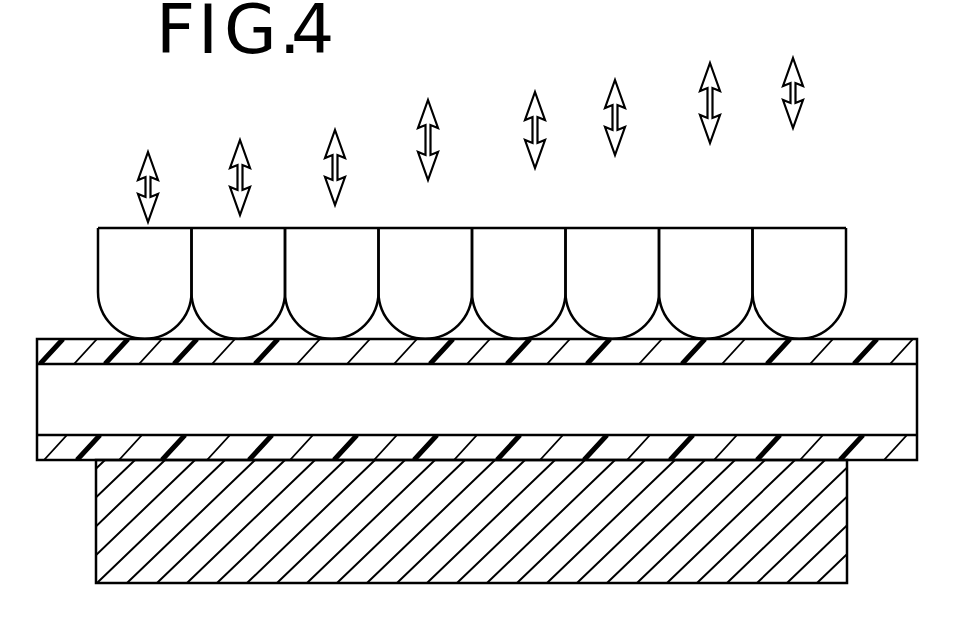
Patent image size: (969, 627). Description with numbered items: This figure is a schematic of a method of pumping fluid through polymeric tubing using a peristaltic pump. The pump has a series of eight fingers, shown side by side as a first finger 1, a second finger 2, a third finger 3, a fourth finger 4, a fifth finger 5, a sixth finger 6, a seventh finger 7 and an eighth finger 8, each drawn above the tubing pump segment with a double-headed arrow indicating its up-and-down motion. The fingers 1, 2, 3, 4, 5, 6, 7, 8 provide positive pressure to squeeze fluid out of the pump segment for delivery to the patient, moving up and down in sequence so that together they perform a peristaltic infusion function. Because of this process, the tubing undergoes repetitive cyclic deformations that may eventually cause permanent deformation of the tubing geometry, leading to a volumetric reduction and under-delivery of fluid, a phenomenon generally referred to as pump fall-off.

The finger 1 is at (145, 283).
The finger 2 is at (239, 283).
The finger 3 is at (332, 283).
The finger 4 is at (426, 283).
The finger 5 is at (519, 283).
The finger 6 is at (613, 283).
The finger 7 is at (706, 283).
The finger 8 is at (800, 283).